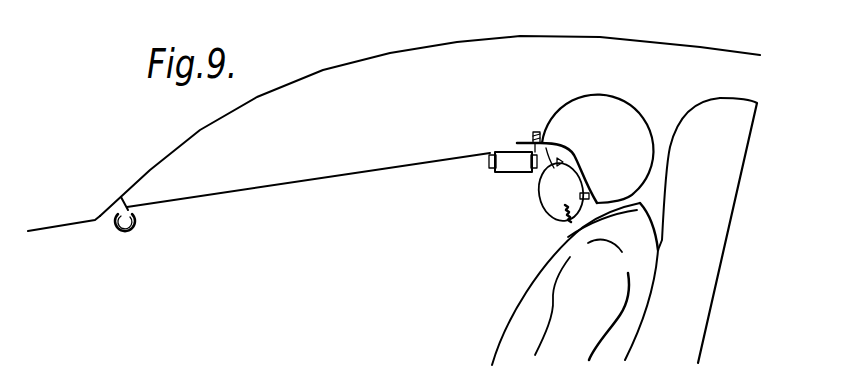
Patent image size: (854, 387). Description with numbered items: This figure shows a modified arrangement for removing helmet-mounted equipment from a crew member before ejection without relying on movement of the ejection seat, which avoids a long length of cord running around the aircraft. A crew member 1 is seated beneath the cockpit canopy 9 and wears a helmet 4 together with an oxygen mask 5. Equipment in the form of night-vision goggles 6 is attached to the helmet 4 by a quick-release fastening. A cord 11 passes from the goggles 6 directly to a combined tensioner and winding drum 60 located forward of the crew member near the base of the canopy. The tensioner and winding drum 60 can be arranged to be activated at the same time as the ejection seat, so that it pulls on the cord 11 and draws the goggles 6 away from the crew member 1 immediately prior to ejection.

The crew member 1 is at (528, 302).
The helmet 4 is at (622, 125).
The oxygen mask 5 is at (552, 193).
The night-vision goggles 6 is at (513, 162).
The cockpit canopy 9 is at (145, 175).
The cord 11 is at (305, 178).
The combined tensioner and winding drum 60 is at (133, 230).